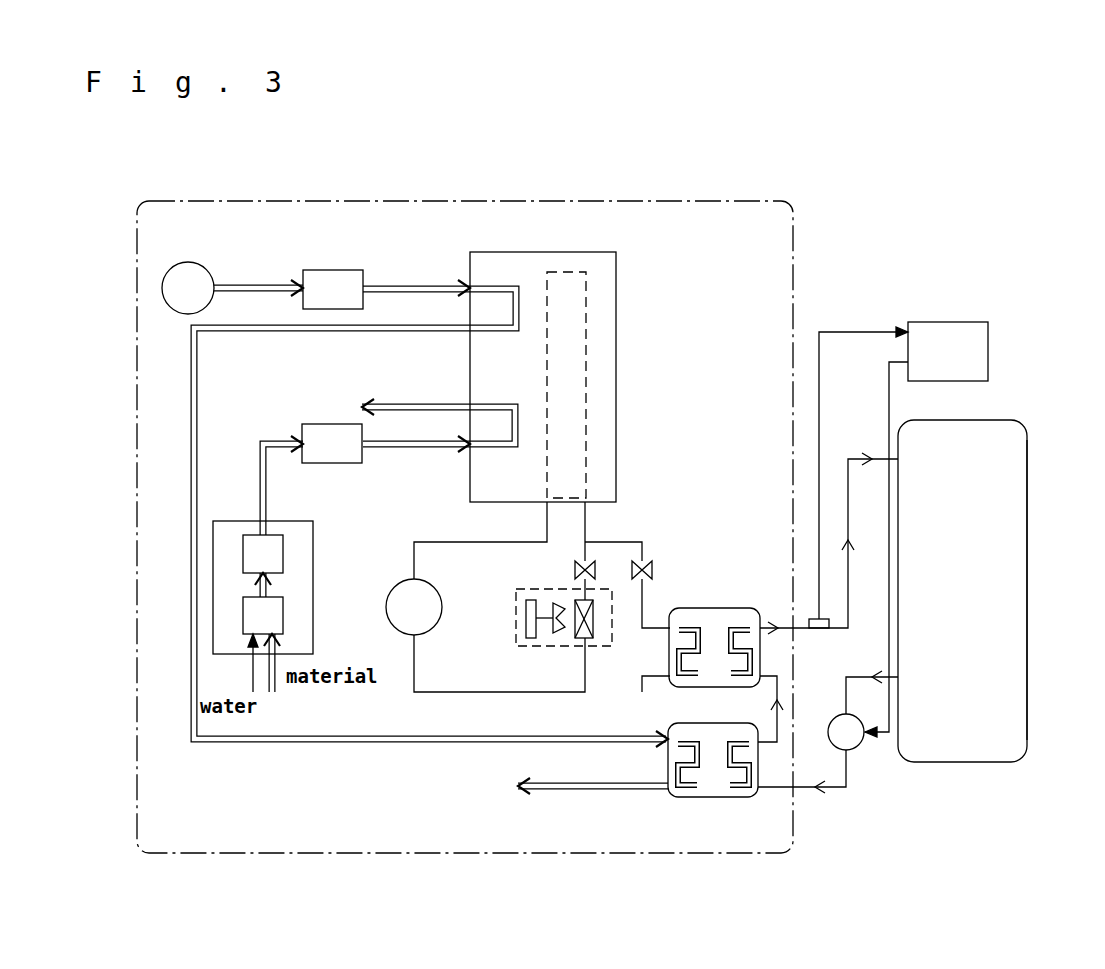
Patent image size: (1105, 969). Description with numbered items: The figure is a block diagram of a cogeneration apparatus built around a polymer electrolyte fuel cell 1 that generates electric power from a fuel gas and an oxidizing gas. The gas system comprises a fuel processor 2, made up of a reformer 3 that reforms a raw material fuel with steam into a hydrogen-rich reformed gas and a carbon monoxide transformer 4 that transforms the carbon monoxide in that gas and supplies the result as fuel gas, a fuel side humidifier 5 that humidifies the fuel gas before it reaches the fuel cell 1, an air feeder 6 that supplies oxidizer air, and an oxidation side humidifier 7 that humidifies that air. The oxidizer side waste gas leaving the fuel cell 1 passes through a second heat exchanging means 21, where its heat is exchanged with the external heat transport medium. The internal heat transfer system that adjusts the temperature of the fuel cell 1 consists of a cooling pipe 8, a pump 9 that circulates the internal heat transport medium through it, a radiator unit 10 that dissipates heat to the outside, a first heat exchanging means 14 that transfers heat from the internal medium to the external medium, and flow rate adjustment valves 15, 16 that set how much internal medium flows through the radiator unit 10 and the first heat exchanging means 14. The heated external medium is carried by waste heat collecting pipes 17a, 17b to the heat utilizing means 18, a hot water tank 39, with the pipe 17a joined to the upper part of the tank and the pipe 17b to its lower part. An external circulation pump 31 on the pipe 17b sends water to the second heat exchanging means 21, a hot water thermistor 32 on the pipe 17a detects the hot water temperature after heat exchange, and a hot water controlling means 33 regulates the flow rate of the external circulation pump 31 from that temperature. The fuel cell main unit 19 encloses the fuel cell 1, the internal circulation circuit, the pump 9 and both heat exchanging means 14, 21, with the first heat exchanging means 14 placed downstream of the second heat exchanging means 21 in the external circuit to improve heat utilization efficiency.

The fuel cell 1 is at (618, 274).
The fuel processor 2 is at (301, 521).
The reformer 3 is at (285, 609).
The carbon monoxide transformer 4 is at (243, 535).
The fuel side humidifier 5 is at (319, 425).
The air feeder 6 is at (181, 263).
The oxidation side humidifier 7 is at (314, 270).
The cooling pipe 8 is at (424, 693).
The pump 9 is at (391, 589).
The radiator unit 10 is at (516, 604).
The first heat exchanging means 14 is at (718, 608).
The flow rate adjustment valve 15 is at (592, 563).
The flow rate adjustment valve 16 is at (650, 563).
The waste heat collecting pipe 17a is at (797, 632).
The waste heat collecting pipe 17b is at (847, 797).
The heat utilizing means 18 is at (997, 420).
The fuel cell main unit 19 is at (620, 204).
The second heat exchanging means 21 is at (712, 800).
The external circulation pump 31 is at (857, 749).
The hot water thermistor 32 is at (807, 617).
The hot water controlling means 33 is at (990, 355).
The hot water tank 39 is at (1030, 467).